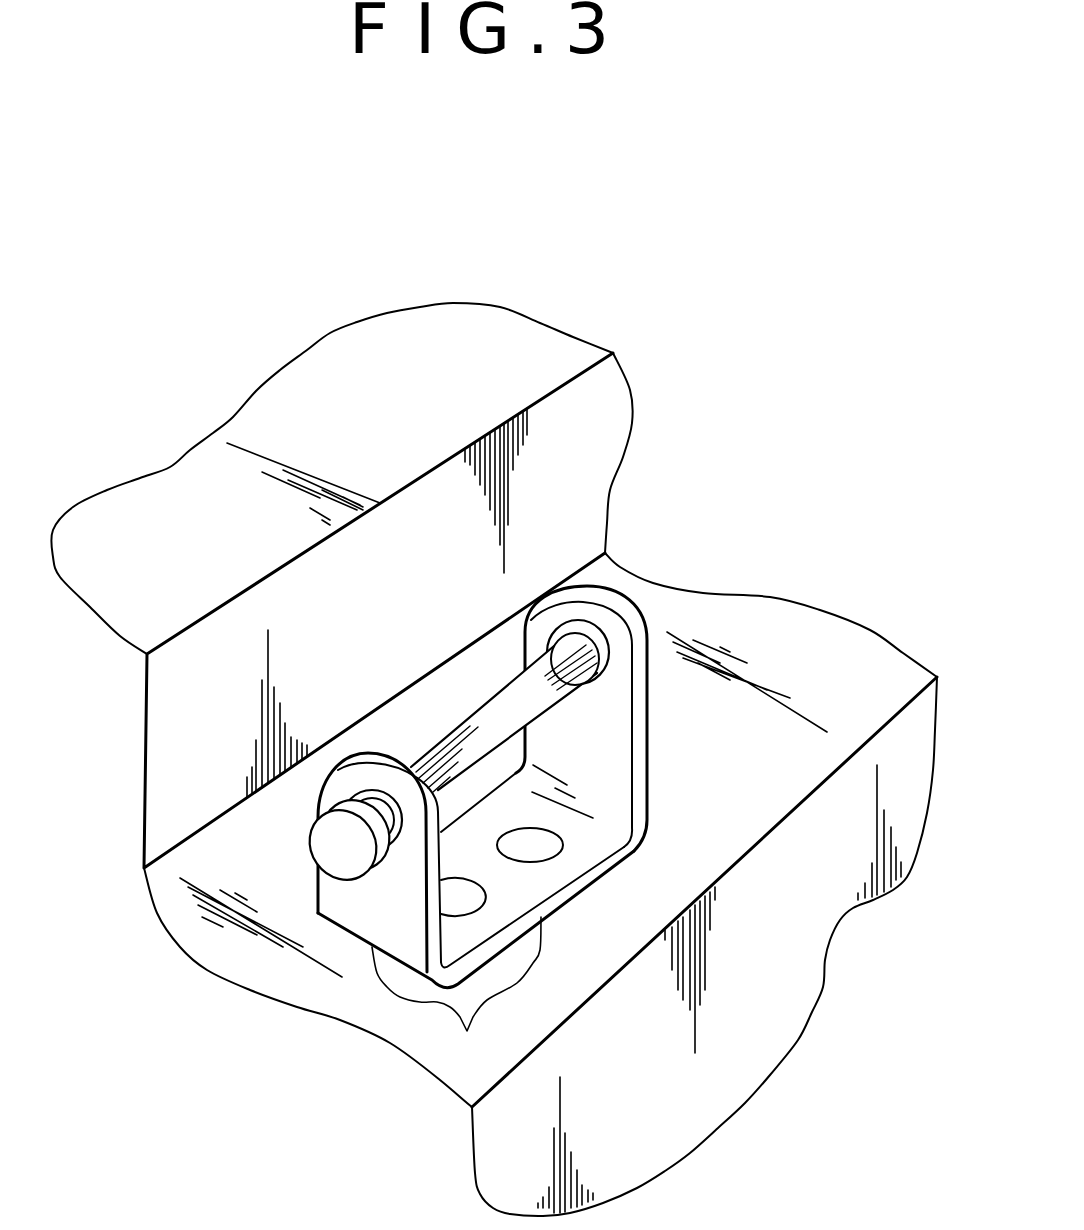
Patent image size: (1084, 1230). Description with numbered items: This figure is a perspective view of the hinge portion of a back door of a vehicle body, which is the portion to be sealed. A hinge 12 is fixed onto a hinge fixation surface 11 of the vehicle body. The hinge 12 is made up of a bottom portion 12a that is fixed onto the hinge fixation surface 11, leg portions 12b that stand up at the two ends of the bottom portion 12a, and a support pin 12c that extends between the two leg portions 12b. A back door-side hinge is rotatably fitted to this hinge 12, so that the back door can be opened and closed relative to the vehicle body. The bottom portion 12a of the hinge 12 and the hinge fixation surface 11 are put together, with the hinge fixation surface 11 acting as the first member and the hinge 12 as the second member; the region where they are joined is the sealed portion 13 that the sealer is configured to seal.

The hinge fixation surface 11 is at (790, 632).
The hinge 12 is at (475, 723).
The bottom portion 12a is at (533, 882).
The leg portions 12b is at (350, 900).
The support pin 12c is at (493, 712).
The sealed portion 13 is at (456, 996).